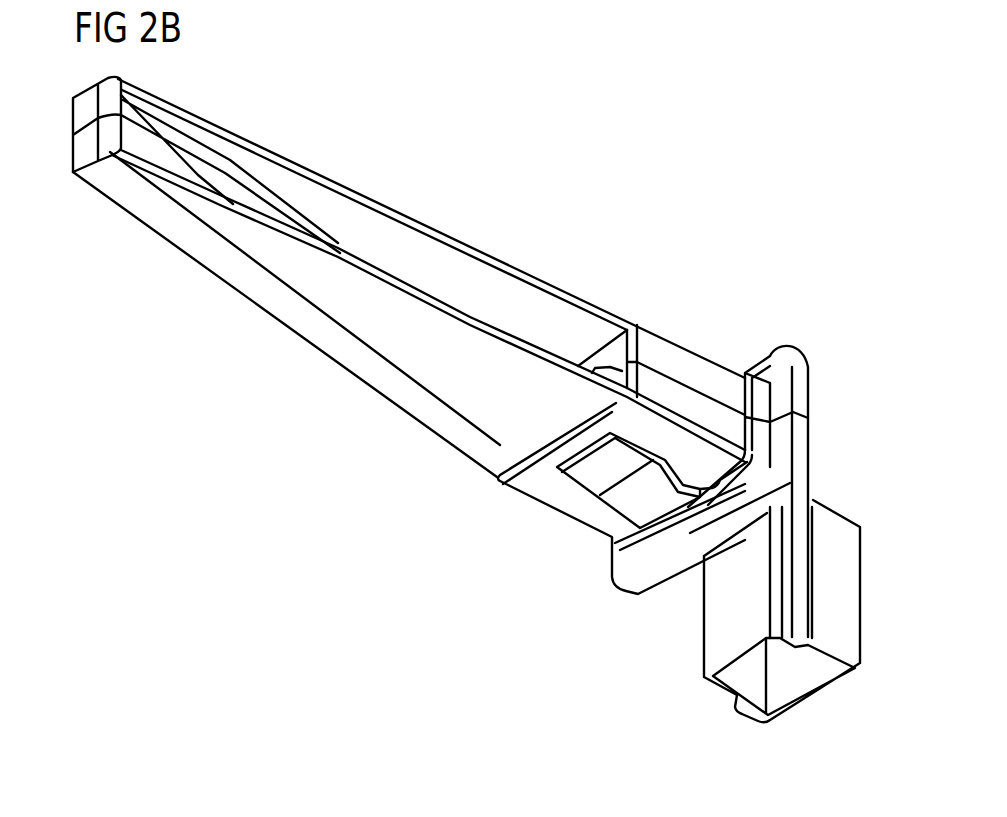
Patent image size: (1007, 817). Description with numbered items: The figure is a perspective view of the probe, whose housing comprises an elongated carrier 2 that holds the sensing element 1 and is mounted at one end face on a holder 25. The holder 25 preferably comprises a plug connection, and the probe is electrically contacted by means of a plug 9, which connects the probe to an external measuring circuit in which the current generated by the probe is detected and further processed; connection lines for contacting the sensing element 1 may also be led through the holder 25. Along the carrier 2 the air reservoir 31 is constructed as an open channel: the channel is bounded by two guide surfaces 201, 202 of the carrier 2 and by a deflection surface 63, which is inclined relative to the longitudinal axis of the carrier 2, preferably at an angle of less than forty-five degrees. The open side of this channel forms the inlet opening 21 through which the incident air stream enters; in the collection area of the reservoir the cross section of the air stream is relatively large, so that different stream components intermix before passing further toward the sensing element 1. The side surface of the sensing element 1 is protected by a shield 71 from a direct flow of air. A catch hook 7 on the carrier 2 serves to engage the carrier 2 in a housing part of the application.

The carrier 2 is at (231, 287).
The guide surface 201 is at (470, 393).
The guide surface 202 is at (487, 255).
The deflection surface 63 is at (187, 153).
The air reservoir (collection area) 31 is at (331, 233).
The inlet opening 21 is at (377, 247).
The sensing element 1 is at (584, 349).
The shield 71 is at (672, 367).
The holder 25 is at (781, 372).
The catch hook 7 is at (608, 472).
The plug 9 is at (712, 627).